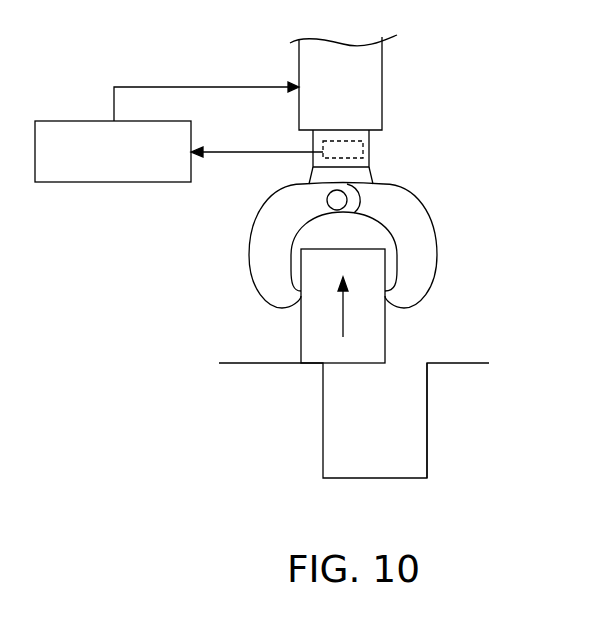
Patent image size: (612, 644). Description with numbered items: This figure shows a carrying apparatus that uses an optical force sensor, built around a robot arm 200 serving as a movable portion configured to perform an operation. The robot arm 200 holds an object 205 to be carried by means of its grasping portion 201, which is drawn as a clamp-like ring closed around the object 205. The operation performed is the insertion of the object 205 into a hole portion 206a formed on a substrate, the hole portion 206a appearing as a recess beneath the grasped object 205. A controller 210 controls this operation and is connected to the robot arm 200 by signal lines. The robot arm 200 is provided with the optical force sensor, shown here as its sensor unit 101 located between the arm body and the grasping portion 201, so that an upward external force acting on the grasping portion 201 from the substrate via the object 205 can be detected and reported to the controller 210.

The sensor unit 101 is at (362, 148).
The robot arm 200 is at (366, 99).
The grasping portion 201 is at (416, 283).
The object 205 is at (366, 346).
The hole portion 206a is at (410, 404).
The controller 210 is at (67, 182).